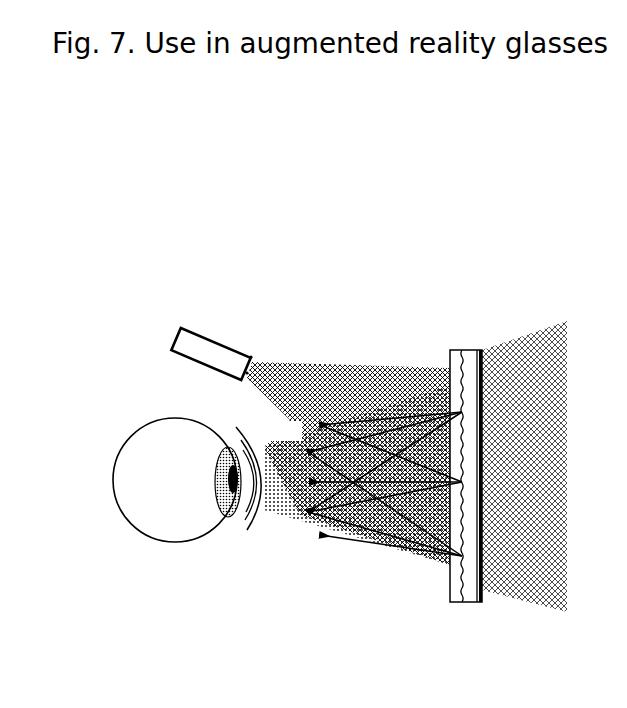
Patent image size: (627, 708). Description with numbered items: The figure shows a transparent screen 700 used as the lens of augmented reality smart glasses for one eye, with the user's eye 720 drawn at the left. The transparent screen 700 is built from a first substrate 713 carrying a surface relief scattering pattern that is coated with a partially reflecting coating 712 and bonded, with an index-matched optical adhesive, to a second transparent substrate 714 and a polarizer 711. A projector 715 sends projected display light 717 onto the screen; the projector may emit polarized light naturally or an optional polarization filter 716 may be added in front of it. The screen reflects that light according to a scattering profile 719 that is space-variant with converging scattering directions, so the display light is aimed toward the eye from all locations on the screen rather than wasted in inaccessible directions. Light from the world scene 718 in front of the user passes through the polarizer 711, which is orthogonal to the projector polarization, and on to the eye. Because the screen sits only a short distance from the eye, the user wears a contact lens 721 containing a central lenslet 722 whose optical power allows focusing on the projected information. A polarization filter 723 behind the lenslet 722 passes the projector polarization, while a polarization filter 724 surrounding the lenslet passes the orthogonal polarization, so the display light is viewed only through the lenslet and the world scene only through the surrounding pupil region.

The transparent screen 700 is at (456, 308).
The polarizer 711 is at (485, 350).
The partially reflecting coating 712 is at (466, 603).
The first substrate 713 is at (448, 592).
The second transparent substrate 714 is at (463, 357).
The projector 715 is at (192, 325).
The polarization filter 716 is at (253, 355).
The projected display light 717 is at (370, 384).
The world scene 718 is at (525, 575).
The scattering profile 719 is at (348, 540).
The eye 720 is at (121, 447).
The contact lens 721 is at (248, 440).
The lenslet 722 is at (312, 424).
The polarization filter 723 is at (262, 510).
The polarization filter 724 is at (250, 520).